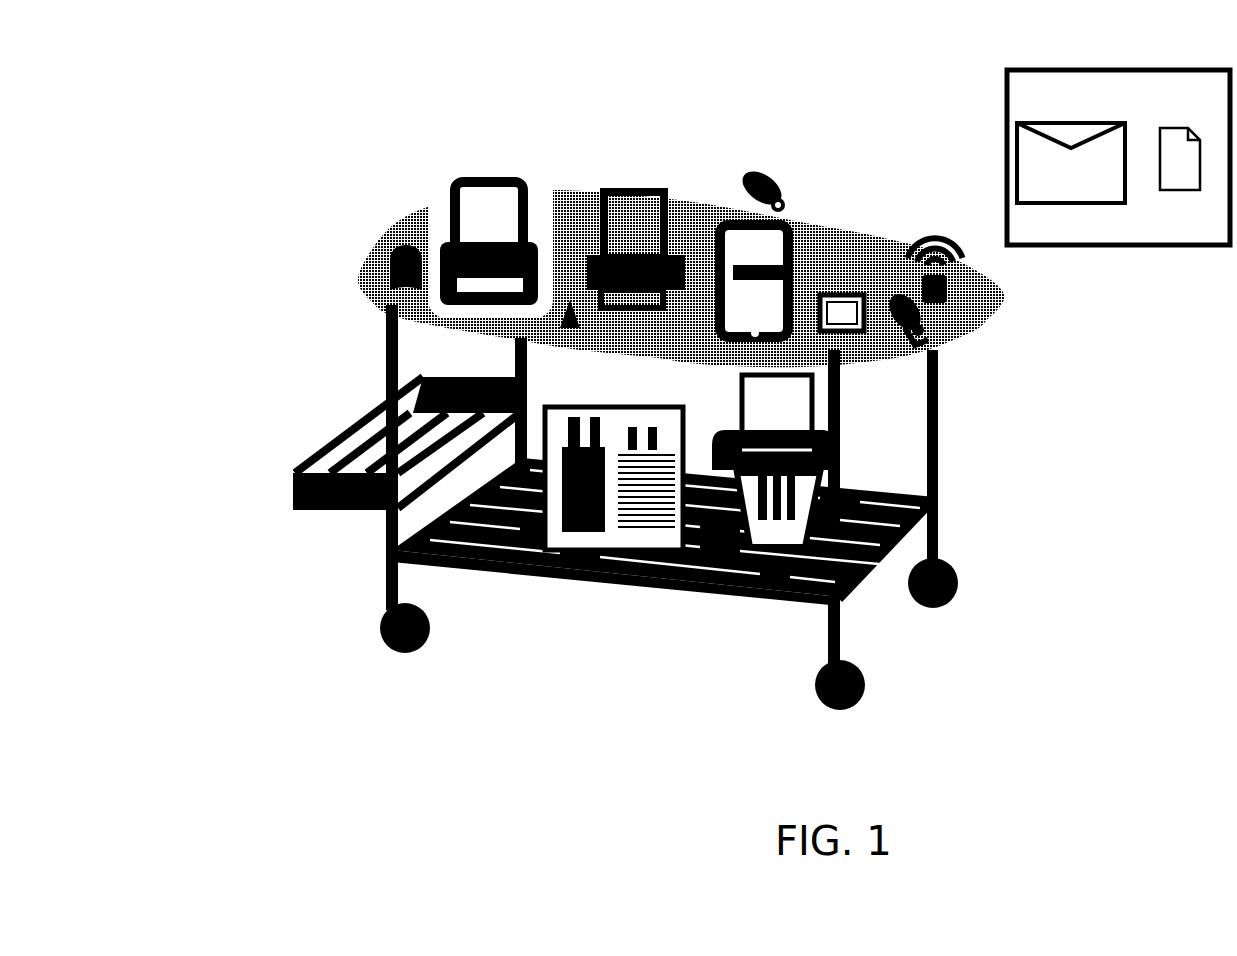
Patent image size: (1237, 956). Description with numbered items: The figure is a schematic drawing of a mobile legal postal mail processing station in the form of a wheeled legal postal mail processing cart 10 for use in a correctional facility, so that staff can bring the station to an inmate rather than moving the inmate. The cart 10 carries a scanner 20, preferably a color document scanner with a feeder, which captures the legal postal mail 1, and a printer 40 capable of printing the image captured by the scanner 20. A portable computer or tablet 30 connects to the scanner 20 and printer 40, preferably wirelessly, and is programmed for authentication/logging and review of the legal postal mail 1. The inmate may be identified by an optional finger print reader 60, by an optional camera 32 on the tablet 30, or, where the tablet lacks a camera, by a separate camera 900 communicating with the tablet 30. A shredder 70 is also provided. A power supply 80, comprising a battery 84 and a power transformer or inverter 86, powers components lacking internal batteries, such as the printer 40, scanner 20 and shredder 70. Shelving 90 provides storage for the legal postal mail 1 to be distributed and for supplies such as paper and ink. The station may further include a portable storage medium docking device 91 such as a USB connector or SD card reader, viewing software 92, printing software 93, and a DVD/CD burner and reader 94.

The legal postal mail 1 is at (1125, 250).
The legal postal mail processing cart 10 is at (390, 228).
The scanner 20 is at (598, 208).
The portable computer or tablet 30 is at (715, 244).
The camera 32 is at (770, 165).
The printer 40 is at (450, 180).
The finger print reader 60 is at (837, 272).
The shredder 70 is at (780, 545).
The power supply 80 is at (533, 570).
The battery 84 is at (590, 532).
The power transformer or inverter 86 is at (648, 540).
The shelving 90 is at (345, 430).
The portable storage medium docking device 91 is at (550, 323).
The viewing software 92 is at (733, 243).
The printing software 93 is at (757, 258).
The DVD/CD burner and reader 94 is at (378, 270).
The separate camera 900 is at (932, 330).